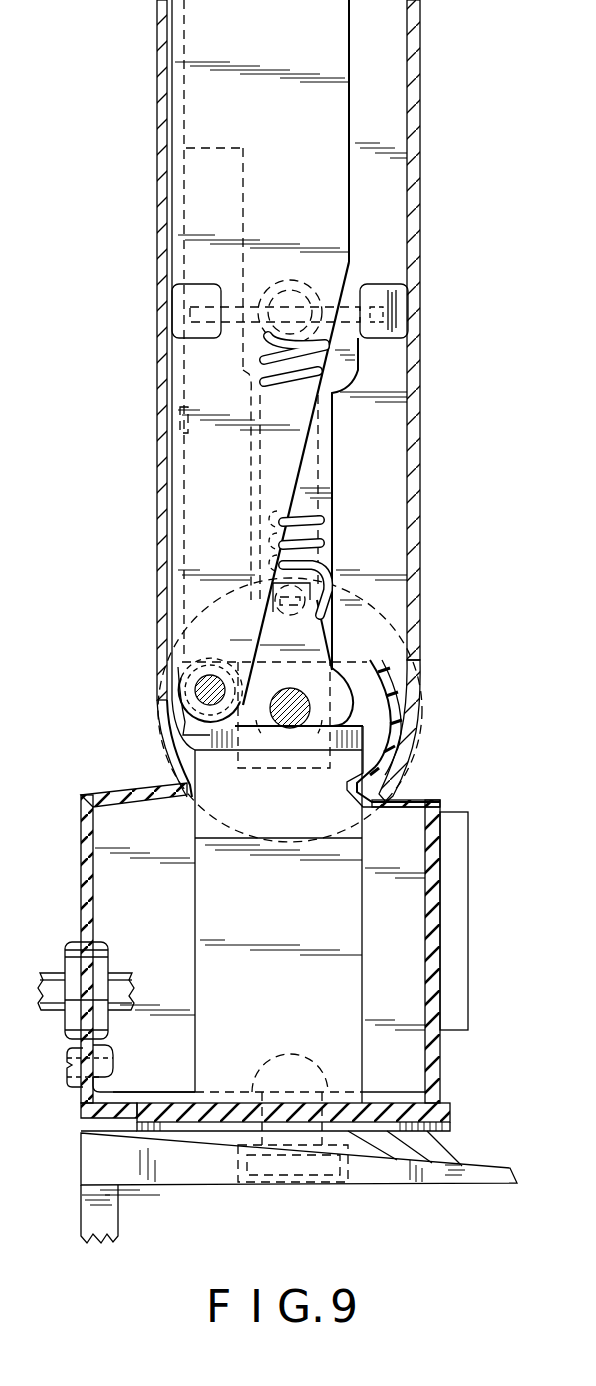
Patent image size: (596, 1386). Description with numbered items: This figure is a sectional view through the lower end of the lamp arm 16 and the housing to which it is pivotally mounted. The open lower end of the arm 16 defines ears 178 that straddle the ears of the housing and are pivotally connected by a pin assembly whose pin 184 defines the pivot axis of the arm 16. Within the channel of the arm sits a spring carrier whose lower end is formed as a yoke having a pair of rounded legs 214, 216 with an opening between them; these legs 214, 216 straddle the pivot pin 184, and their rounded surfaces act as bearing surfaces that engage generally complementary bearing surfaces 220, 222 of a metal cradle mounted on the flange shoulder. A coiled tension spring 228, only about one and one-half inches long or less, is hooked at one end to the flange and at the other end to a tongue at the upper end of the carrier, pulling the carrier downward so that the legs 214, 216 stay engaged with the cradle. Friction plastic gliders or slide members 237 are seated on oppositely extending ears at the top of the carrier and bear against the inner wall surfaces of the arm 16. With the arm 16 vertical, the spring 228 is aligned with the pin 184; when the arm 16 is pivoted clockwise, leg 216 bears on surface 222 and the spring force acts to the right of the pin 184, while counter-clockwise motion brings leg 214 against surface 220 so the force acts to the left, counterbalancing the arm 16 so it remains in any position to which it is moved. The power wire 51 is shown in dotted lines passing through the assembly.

The arm 16 is at (424, 385).
The friction plastic gliders or slide members 237 is at (172, 312).
The coiled tension spring 228 is at (320, 545).
The rounded leg 216 is at (340, 687).
The ears 178 is at (421, 702).
The bearing surface 220 is at (178, 736).
The bearing surface 222 is at (372, 737).
The rounded leg 214 is at (257, 716).
The pin 184 is at (293, 716).
The power wire 51 is at (50, 973).